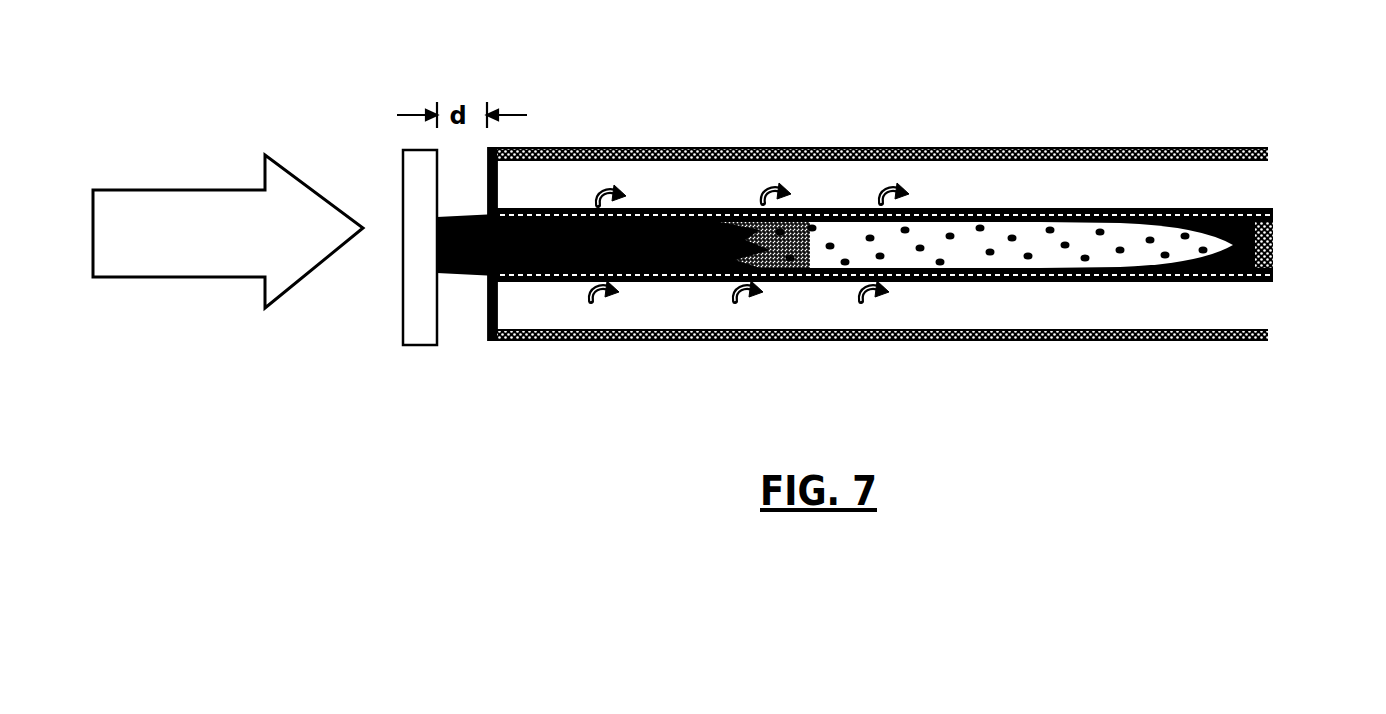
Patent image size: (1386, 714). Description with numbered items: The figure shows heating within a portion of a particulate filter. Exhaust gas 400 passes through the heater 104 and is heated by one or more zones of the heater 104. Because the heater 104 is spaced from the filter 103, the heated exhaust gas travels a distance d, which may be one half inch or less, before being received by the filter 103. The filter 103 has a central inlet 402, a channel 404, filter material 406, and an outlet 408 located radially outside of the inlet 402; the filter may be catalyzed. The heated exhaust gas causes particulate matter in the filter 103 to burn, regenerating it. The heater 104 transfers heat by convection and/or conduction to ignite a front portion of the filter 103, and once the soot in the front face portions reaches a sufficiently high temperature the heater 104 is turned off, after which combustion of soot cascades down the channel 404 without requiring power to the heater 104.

The filter 103 is at (780, 148).
The heater 104 is at (420, 345).
The exhaust gas 400 is at (205, 277).
The central inlet 402 is at (476, 276).
The channel 404 is at (972, 212).
The filter material 406 is at (928, 212).
The outlet 408 is at (1276, 189).